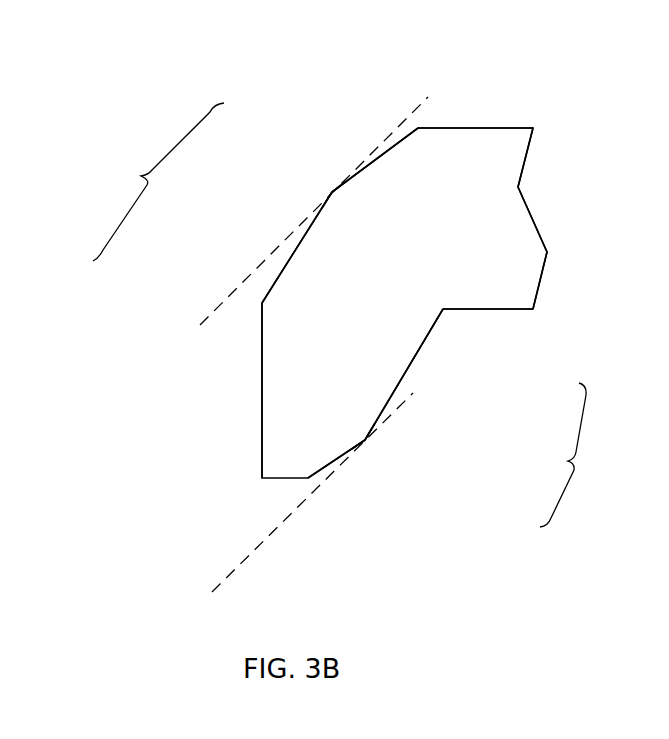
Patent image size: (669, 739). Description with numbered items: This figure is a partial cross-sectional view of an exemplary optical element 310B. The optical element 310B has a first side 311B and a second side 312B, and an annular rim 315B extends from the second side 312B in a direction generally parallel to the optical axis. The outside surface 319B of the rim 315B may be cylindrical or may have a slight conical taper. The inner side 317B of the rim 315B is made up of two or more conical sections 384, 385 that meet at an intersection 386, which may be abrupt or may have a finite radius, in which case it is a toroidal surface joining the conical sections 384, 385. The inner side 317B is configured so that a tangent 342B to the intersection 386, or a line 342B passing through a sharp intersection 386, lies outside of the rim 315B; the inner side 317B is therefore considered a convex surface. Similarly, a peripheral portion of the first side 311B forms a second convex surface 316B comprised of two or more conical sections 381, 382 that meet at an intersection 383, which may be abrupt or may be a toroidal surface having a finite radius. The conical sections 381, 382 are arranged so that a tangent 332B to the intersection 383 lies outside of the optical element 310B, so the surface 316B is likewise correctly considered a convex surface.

The annular rim 315B is at (300, 413).
The tangent 332B is at (398, 110).
The tangent 342B is at (260, 568).
The conical section 381 is at (359, 154).
The intersection 383 is at (332, 192).
The conical section 382 is at (276, 259).
The second convex surface 316B is at (153, 182).
The first side 311B is at (475, 114).
The optical element 310B is at (523, 167).
The second side 312B is at (478, 325).
The conical section 384 is at (415, 404).
The intersection 386 is at (365, 440).
The conical section 385 is at (347, 469).
The inner side 317B is at (591, 455).
The outside surface 319B is at (248, 452).